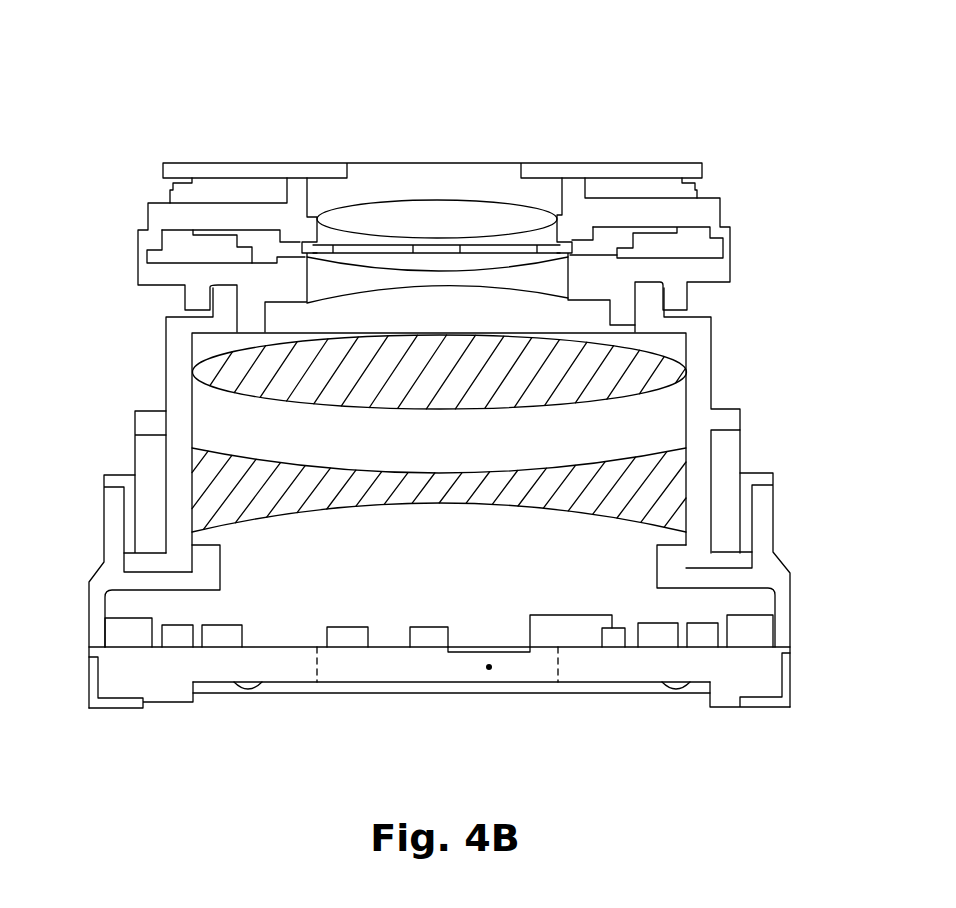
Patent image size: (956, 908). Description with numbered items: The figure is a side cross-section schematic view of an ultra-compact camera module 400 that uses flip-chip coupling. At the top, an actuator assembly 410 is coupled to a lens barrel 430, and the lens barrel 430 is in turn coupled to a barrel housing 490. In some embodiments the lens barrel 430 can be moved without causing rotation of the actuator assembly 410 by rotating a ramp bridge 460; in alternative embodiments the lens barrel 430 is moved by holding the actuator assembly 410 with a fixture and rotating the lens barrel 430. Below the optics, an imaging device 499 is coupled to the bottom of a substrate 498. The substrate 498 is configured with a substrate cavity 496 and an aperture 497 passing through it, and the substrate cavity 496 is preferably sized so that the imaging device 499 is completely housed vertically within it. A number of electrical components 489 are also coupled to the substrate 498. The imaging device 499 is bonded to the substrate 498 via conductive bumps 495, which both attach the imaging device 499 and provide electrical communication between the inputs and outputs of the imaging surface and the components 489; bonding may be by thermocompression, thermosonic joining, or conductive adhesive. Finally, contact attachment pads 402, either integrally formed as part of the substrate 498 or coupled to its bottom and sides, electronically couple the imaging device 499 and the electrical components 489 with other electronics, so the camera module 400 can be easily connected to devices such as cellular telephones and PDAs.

The ultra-compact camera module 400 is at (113, 106).
The actuator assembly 410 is at (720, 212).
The lens barrel 430 is at (711, 370).
The ramp bridge 460 is at (740, 447).
The barrel housing 490 is at (773, 530).
The contact attachment pads 402 is at (93, 702).
The substrate 498 is at (792, 648).
The substrate cavity 496 is at (191, 670).
The imaging device 499 is at (633, 693).
The conductive bumps 495 is at (248, 690).
The aperture 497 is at (489, 667).
The electrical components 489 is at (220, 634).